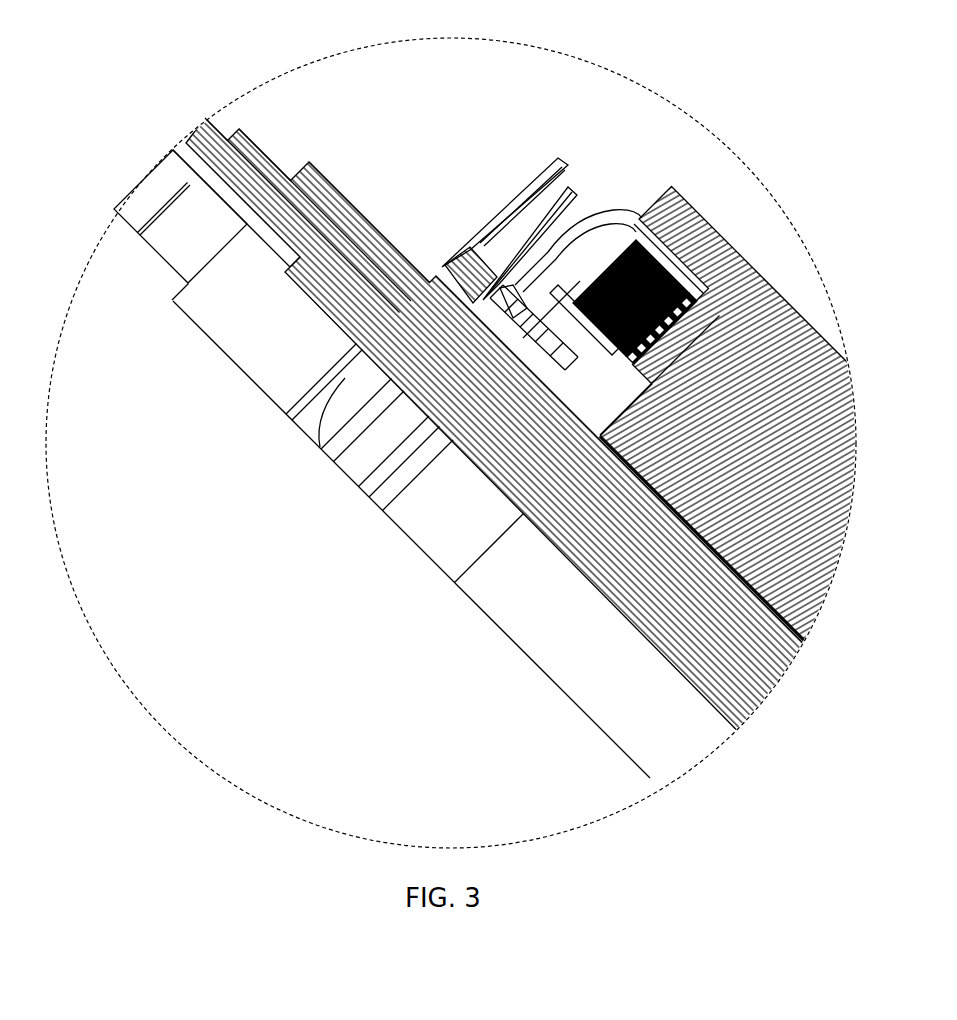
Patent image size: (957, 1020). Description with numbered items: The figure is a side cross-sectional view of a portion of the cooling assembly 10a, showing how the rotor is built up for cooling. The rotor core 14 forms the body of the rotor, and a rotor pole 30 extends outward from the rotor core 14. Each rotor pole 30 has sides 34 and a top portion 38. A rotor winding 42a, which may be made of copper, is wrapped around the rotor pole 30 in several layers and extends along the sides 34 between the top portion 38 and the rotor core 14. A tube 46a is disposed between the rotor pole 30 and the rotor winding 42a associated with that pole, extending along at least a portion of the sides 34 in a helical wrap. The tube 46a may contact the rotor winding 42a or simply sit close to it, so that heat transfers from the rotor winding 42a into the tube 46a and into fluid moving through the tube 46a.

The cooling assembly 10a is at (802, 103).
The rotor core 14 is at (750, 560).
The rotor pole 30 is at (776, 305).
The sides 34 is at (537, 339).
The top portion 38 is at (665, 225).
The rotor winding 42a is at (611, 262).
The tube 46a is at (660, 312).